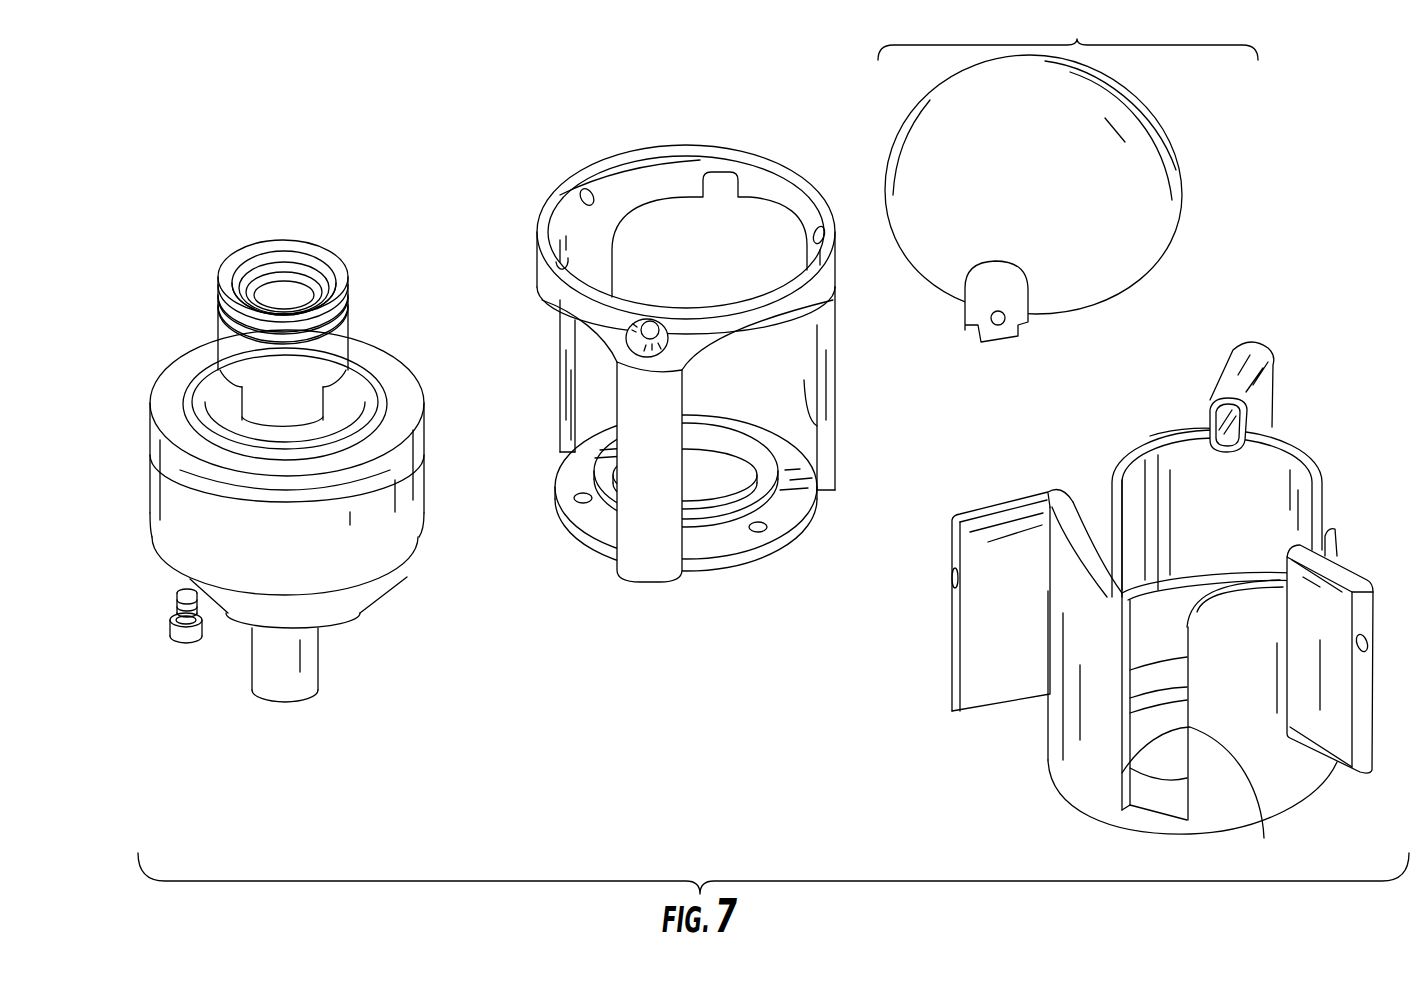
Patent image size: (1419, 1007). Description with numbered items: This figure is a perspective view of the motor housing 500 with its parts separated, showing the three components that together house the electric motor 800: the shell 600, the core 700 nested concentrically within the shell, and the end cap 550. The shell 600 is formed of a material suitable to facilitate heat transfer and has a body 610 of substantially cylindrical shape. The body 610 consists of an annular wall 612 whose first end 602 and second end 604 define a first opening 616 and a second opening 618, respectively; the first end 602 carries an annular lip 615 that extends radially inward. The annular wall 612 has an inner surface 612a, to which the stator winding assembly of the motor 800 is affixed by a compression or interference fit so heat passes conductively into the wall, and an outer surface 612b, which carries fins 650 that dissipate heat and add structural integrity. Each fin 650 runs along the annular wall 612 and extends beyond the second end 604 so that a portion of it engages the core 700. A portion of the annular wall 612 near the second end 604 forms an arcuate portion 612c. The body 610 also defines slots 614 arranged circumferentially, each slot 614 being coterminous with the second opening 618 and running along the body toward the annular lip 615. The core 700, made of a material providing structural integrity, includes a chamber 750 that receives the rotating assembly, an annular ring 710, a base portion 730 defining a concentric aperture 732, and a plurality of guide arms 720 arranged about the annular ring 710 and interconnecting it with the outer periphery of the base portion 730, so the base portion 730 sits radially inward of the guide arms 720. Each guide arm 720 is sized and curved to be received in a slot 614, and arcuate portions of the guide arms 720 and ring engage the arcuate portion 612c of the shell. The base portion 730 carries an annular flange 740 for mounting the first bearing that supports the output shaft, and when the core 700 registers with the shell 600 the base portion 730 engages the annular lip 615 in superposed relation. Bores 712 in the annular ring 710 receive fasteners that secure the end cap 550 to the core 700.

The motor housing 500 is at (1068, 176).
The end cap 550 is at (1136, 89).
The shell 600 is at (1144, 476).
The first end 602 is at (1297, 803).
The second end 604 is at (1160, 433).
The body 610 is at (1300, 462).
The annular wall 612 is at (1068, 724).
The inner surface 612a is at (1275, 475).
The outer surface 612b is at (1068, 650).
The arcuate portion 612c is at (1113, 603).
The slot 614 is at (1260, 807).
The annular lip 615 is at (1158, 800).
The first opening 616 is at (1157, 757).
The second opening 618 is at (1142, 472).
The fin 650 is at (1338, 577).
The core 700 is at (706, 323).
The annular ring 710 is at (633, 170).
The bore 712 is at (647, 332).
The guide arm 720 is at (562, 357).
The base portion 730 is at (608, 540).
The aperture 732 is at (718, 502).
The annular flange 740 is at (718, 425).
The chamber 750 is at (686, 237).
The electric motor 800 is at (170, 294).